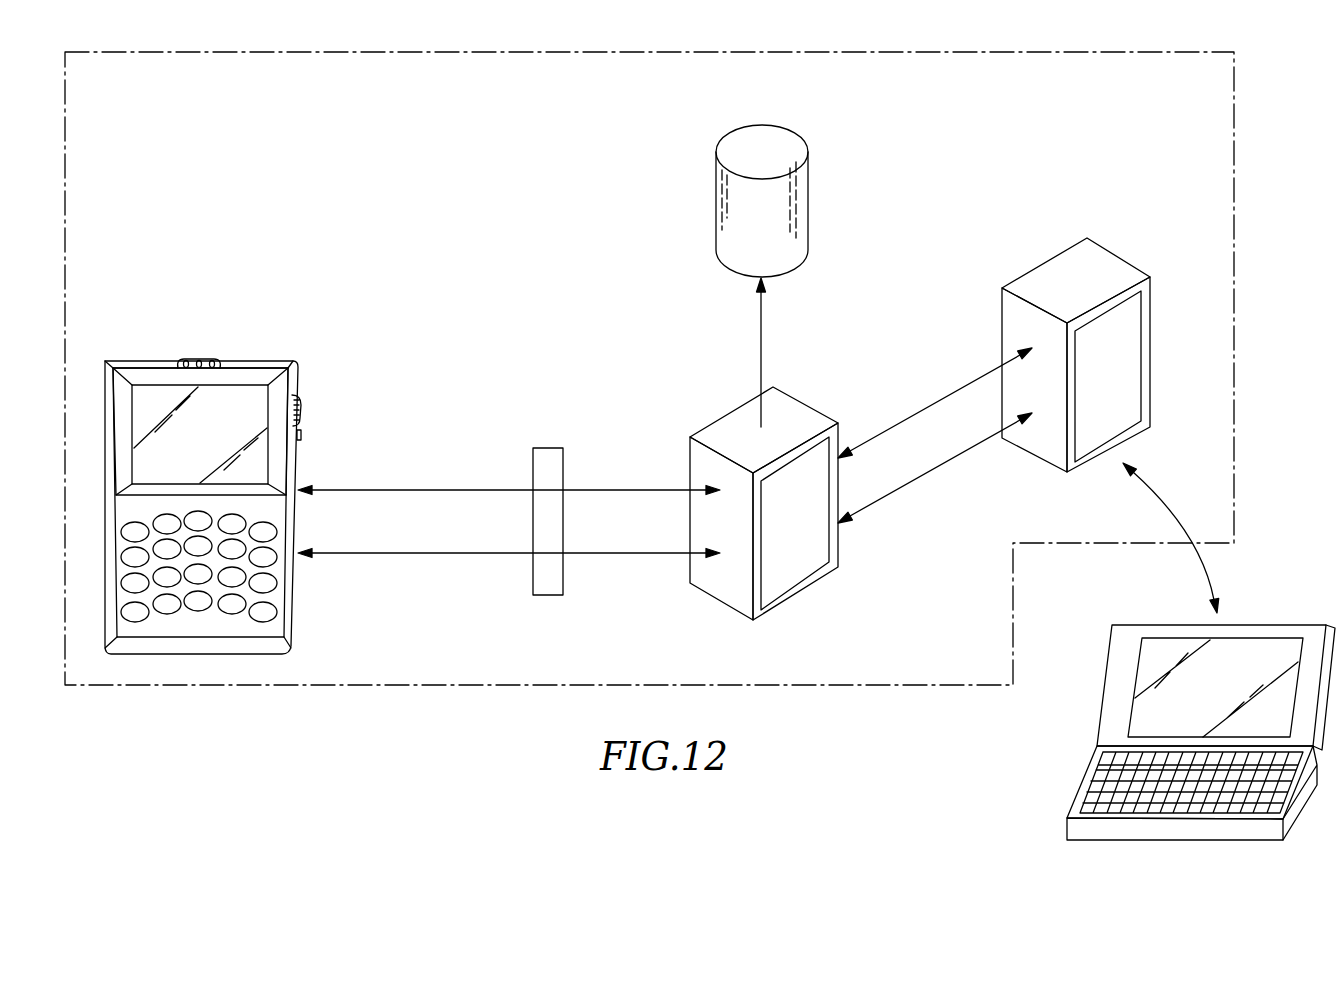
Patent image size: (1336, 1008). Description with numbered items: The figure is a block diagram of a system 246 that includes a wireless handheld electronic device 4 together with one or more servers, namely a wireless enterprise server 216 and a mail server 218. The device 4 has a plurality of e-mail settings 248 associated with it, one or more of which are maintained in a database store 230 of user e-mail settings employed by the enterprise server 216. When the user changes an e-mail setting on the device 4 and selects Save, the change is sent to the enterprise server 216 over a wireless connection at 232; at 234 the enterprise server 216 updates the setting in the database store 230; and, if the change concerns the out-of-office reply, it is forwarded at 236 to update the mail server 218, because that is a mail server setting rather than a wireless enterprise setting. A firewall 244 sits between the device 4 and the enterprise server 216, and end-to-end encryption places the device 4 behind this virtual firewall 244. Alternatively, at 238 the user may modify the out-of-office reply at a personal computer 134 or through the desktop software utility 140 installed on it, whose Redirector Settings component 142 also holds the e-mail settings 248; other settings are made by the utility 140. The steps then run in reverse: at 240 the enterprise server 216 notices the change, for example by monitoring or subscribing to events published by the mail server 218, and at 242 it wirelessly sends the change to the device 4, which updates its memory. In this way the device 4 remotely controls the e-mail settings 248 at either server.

The wireless handheld electronic device 4 is at (231, 485).
The e-mail settings 248 is at (286, 452).
The wireless connection 232 is at (458, 489).
The wireless sending of change 242 is at (437, 554).
The firewall 244 is at (543, 447).
The wireless enterprise server 216 is at (712, 596).
The database store 230 is at (800, 130).
The e-mail setting update 234 is at (758, 350).
The forwarding of out-of-office setting 236 is at (941, 390).
The change notice 240 is at (940, 468).
The mail server 218 is at (1150, 312).
The PC-side setting modification 238 is at (1175, 504).
The system 246 is at (1235, 156).
The desktop software utility 140 is at (1166, 752).
The personal computer 134 is at (1092, 842).
The Redirector Settings component 142 is at (1272, 829).